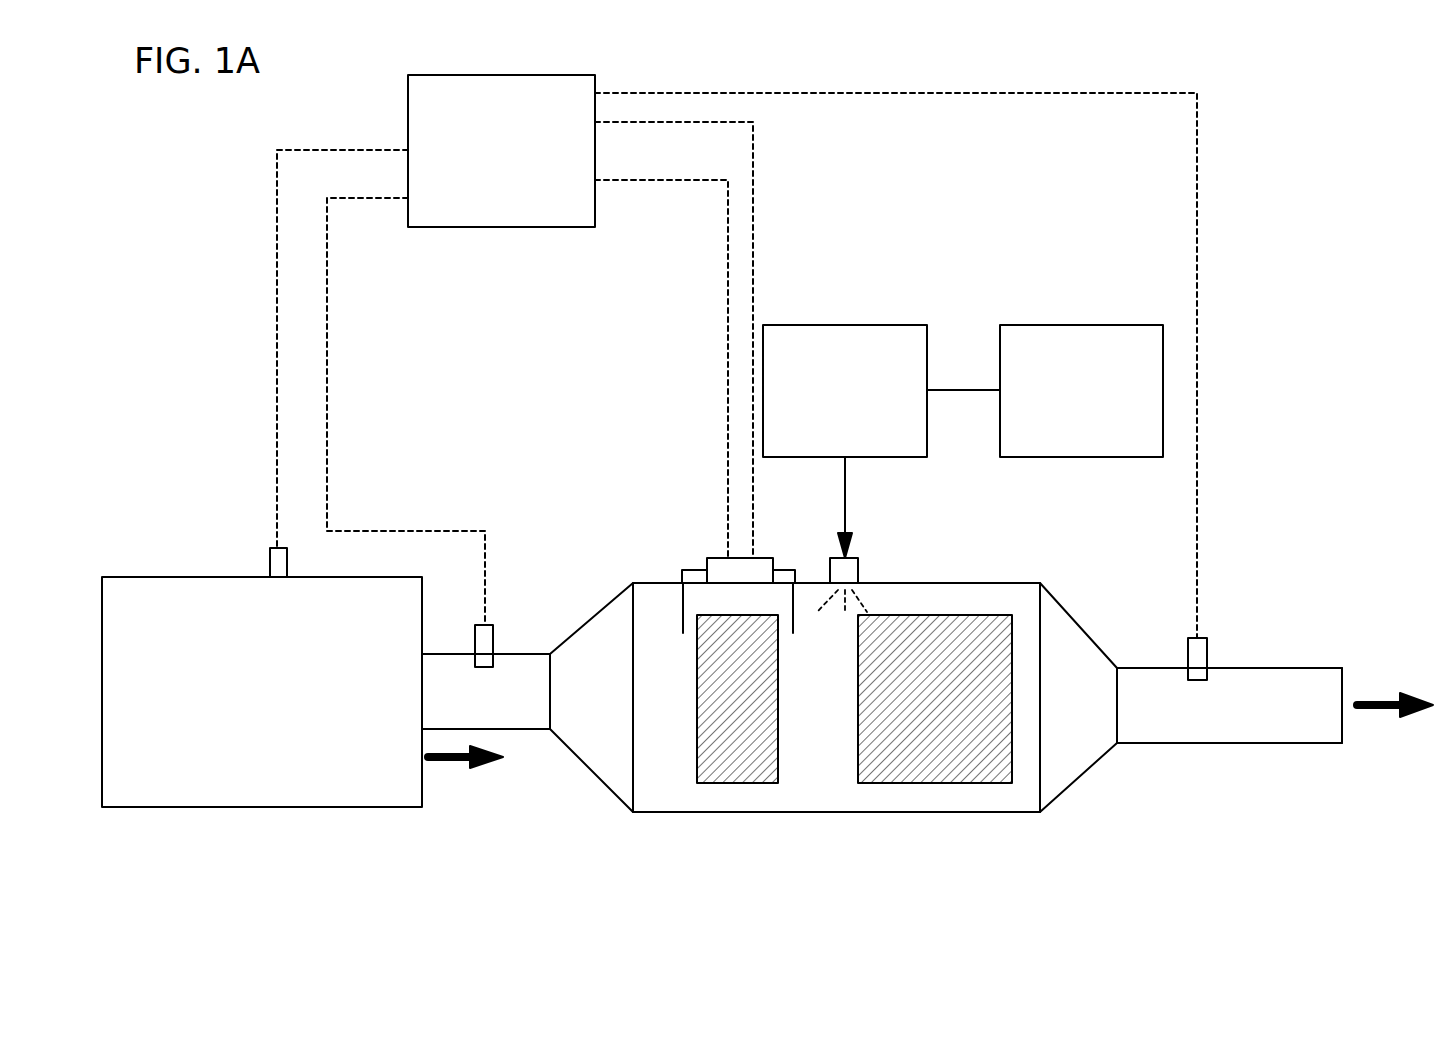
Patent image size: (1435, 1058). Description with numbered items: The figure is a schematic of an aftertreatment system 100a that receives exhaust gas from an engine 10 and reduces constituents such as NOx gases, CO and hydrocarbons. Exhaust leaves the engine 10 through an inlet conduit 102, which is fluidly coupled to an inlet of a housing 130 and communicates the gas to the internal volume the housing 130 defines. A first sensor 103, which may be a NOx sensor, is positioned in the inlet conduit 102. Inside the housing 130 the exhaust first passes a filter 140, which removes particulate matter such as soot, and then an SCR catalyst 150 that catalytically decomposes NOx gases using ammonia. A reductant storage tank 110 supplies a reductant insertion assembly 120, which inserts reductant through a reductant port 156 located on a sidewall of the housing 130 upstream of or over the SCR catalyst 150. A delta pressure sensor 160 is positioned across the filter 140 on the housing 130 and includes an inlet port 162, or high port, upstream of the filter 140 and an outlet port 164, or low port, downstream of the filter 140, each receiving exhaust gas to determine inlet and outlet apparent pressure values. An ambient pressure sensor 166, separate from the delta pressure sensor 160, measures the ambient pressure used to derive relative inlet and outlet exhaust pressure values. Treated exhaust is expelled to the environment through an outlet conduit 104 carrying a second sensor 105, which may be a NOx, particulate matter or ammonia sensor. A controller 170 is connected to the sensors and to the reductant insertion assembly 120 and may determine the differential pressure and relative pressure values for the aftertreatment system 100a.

The aftertreatment system 100a is at (1230, 130).
The engine 10 is at (249, 717).
The inlet conduit 102 is at (533, 713).
The first sensor 103 is at (488, 647).
The outlet conduit 104 is at (1303, 735).
The second sensor 105 is at (1200, 657).
The reductant storage tank 110 is at (1061, 446).
The reductant insertion assembly 120 is at (825, 446).
The housing 130 is at (863, 812).
The filter 140 is at (740, 770).
The SCR catalyst 150 is at (935, 760).
The reductant port 156 is at (845, 575).
The delta pressure sensor 160 is at (718, 566).
The inlet port 162 is at (695, 570).
The outlet port 164 is at (784, 570).
The ambient pressure sensor 166 is at (275, 563).
The controller 170 is at (481, 177).